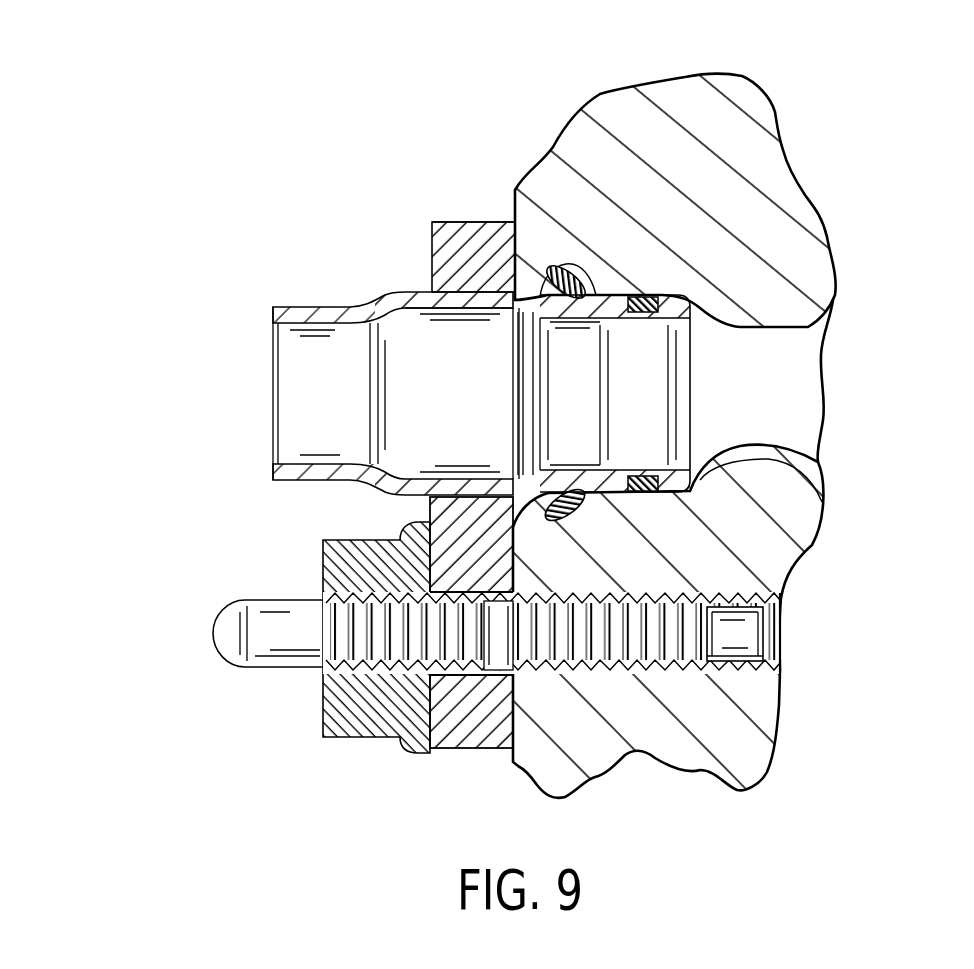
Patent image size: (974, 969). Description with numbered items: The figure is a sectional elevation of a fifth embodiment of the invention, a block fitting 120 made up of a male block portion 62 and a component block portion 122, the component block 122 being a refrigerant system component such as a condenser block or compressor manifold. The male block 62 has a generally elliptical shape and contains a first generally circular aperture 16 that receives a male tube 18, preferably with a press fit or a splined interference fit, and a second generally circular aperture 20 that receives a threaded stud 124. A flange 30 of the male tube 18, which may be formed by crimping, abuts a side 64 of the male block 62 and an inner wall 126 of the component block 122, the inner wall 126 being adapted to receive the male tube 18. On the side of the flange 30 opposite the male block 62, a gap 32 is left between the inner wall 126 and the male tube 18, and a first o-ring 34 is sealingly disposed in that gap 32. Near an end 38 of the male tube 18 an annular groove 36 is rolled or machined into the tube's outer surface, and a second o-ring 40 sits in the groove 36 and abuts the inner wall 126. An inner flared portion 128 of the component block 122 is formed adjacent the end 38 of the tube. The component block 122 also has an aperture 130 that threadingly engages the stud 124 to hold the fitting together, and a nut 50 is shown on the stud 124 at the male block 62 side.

The first generally circular aperture 16 is at (470, 292).
The male tube 18 is at (305, 307).
The second generally circular aperture 20 is at (464, 680).
The flange 30 is at (445, 292).
The gap 32 is at (604, 282).
The first o-ring 34 is at (560, 268).
The annular groove 36 is at (680, 322).
The end of the male tube 38 is at (692, 433).
The second o-ring 40 is at (650, 290).
The nut 50 is at (350, 717).
The male block portion 62 is at (465, 222).
The side of the male block 64 is at (515, 235).
The block fitting 120 is at (527, 813).
The component block portion 122 is at (800, 262).
The threaded stud 124 is at (258, 620).
The inner wall 126 is at (525, 255).
The inner flared portion 128 is at (795, 466).
The aperture 130 is at (783, 649).